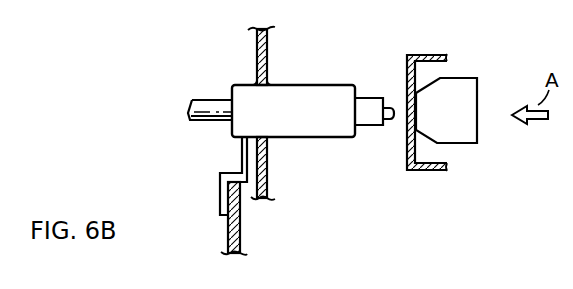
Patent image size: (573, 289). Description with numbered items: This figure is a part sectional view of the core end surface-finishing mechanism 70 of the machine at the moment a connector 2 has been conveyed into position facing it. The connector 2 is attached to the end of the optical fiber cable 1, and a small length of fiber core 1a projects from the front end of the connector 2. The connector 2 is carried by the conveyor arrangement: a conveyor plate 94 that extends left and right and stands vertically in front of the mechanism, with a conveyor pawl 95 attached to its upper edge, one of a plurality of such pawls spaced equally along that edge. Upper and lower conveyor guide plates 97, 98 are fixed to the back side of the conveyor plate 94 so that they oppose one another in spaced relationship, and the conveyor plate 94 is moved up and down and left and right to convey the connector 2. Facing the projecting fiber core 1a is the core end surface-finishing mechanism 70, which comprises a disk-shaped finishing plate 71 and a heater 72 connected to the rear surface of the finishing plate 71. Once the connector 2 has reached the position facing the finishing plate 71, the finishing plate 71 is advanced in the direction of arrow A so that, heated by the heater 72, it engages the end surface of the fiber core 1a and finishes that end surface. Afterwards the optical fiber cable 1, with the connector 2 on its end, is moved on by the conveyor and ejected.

The optical fiber cable 1 is at (208, 97).
The fiber core 1a is at (393, 118).
The connector 2 is at (323, 119).
The core end surface-finishing mechanism 70 is at (433, 130).
The finishing plate 71 is at (407, 75).
The heater 72 is at (460, 90).
The conveyor plate 94 is at (241, 243).
The conveyor pawl 95 is at (242, 150).
The upper conveyor guide plate 97 is at (268, 54).
The lower conveyor guide plate 98 is at (268, 179).